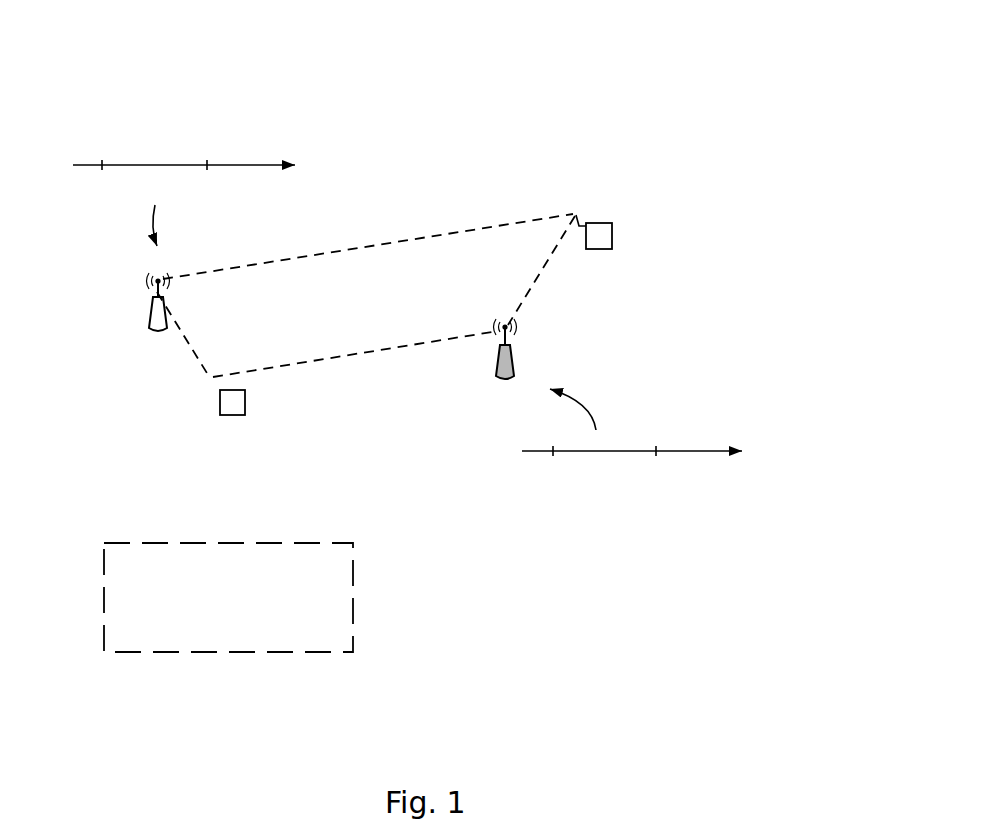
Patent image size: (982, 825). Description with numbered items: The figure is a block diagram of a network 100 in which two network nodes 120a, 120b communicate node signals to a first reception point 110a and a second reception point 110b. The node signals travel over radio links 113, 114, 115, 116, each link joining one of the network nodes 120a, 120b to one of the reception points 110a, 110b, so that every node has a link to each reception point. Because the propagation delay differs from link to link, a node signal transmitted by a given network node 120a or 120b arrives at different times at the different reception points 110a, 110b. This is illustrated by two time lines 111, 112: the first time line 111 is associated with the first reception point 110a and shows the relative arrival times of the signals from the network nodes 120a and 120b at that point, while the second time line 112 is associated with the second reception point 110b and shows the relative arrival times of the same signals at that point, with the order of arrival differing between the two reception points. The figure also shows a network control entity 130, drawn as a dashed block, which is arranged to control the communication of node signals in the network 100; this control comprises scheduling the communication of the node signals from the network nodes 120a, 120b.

The network 100 is at (714, 96).
The time line 111 is at (278, 126).
The time line 112 is at (740, 403).
The first reception point 110a is at (150, 300).
The second reception point 110b is at (510, 349).
The network node 120a is at (233, 415).
The network node 120b is at (593, 223).
The radio link 113 is at (190, 339).
The radio link 114 is at (357, 357).
The radio link 115 is at (357, 248).
The radio link 116 is at (541, 273).
The network control entity 130 is at (227, 652).